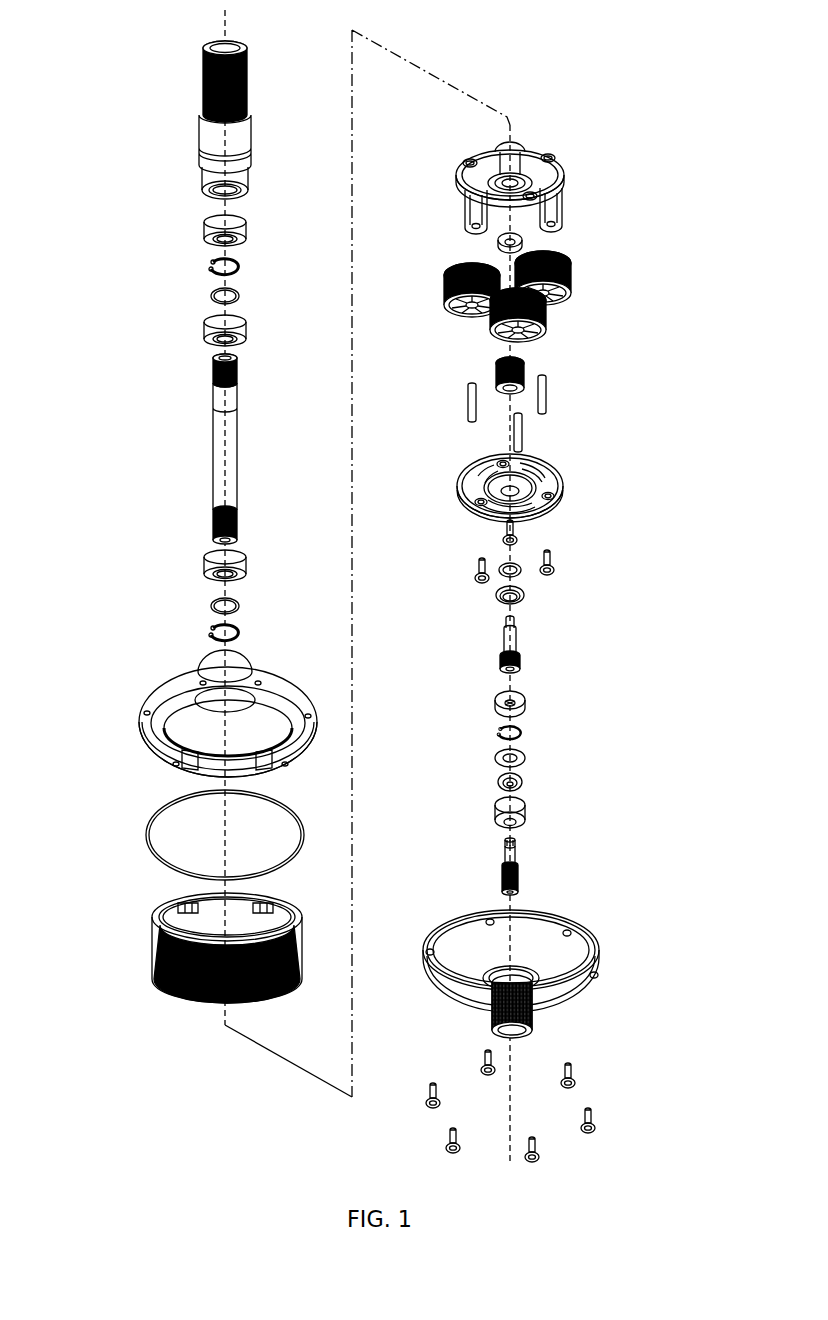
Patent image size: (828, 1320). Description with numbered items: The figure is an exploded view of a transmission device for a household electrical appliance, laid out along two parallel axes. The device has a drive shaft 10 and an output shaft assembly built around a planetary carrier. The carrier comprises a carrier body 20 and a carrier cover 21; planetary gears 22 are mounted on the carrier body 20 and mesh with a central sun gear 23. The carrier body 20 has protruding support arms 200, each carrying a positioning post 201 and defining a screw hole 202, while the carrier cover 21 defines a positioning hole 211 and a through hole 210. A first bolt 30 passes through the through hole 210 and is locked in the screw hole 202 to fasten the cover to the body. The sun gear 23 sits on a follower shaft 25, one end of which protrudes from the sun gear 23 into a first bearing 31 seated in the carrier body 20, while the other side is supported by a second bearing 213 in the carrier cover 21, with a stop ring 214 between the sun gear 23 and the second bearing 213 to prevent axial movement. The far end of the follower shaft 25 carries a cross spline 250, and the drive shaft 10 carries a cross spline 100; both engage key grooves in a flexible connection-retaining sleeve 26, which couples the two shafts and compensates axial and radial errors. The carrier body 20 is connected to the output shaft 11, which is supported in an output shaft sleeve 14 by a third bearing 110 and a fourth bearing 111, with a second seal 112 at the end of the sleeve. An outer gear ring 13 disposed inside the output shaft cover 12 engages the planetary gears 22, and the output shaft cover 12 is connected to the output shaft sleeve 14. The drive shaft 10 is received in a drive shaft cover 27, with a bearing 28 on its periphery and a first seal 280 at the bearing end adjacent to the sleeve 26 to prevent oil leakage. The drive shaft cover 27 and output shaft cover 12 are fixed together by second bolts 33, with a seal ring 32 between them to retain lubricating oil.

The drive shaft 10 is at (507, 856).
The cross spline 100 is at (506, 841).
The output shaft 11 is at (218, 447).
The third bearing 110 is at (210, 326).
The fourth bearing 111 is at (214, 562).
The second seal 112 is at (210, 224).
The output shaft cover 12 is at (160, 700).
The outer gear ring 13 is at (160, 925).
The output shaft sleeve 14 is at (212, 141).
The carrier body 20 is at (513, 194).
The support arm 200 is at (558, 198).
The positioning post 201 is at (552, 222).
The screw hole 202 is at (478, 224).
The carrier cover 21 is at (553, 477).
The through hole 210 is at (552, 499).
The positioning hole 211 is at (556, 492).
The second bearing 213 is at (524, 598).
The stop ring 214 is at (501, 566).
The planetary gear 22 is at (571, 284).
The sun gear 23 is at (526, 368).
The follower shaft 25 is at (551, 658).
The cross spline 250 is at (520, 668).
The flexible connection-retaining sleeve 26 is at (525, 708).
The drive shaft cover 27 is at (597, 952).
The bearing 28 is at (525, 811).
The first seal 280 is at (522, 782).
The first bolt 30 is at (554, 565).
The first bearing 31 is at (499, 241).
The seal ring 32 is at (152, 822).
The second bolt 33 is at (571, 1068).